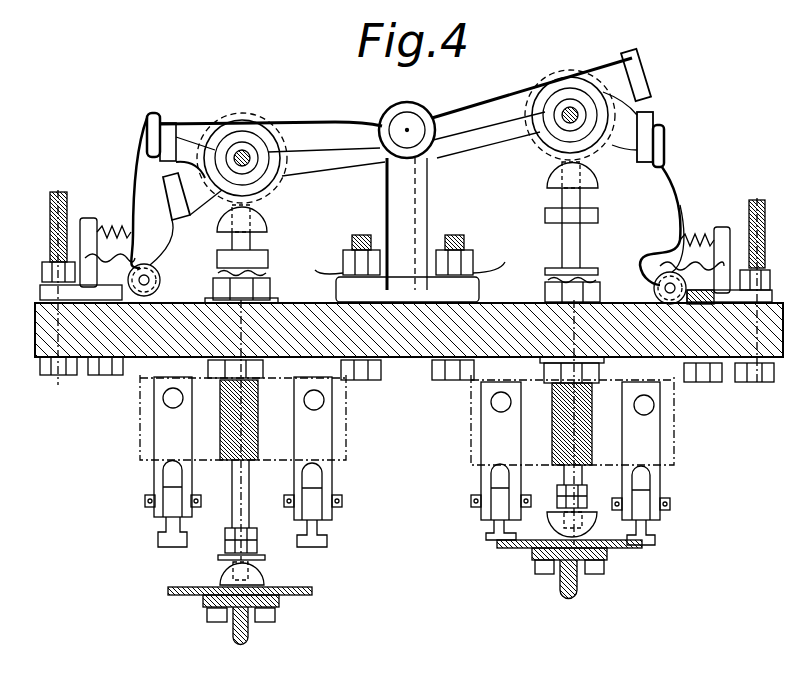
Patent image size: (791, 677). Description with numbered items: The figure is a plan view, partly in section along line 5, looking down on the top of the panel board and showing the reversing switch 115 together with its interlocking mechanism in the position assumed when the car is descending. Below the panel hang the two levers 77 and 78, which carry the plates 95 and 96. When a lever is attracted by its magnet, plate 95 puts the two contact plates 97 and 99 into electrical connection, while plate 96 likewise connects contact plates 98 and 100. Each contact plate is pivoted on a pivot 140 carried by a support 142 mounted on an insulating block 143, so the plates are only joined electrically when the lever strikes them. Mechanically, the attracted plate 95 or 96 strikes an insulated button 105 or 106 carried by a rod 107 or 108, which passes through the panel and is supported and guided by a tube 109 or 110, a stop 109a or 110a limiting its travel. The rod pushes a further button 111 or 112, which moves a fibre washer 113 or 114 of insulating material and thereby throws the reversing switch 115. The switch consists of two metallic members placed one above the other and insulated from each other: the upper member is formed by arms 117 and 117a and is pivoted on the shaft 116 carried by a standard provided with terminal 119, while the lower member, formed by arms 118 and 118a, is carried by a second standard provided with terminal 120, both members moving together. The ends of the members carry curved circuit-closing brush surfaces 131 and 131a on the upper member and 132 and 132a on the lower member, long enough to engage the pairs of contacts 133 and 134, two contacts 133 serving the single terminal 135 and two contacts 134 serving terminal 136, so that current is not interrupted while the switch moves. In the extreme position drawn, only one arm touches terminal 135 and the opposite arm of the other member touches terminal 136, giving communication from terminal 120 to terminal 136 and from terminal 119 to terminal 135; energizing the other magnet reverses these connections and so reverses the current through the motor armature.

The section line 5 is at (675, 30).
The lever 77 is at (236, 630).
The lever 78 is at (578, 590).
The plate 95 is at (188, 595).
The plate 96 is at (620, 550).
The contact plate 97 is at (165, 543).
The contact plate 98 is at (493, 535).
The contact plate 99 is at (315, 540).
The contact plate 100 is at (652, 536).
The insulated button 105 is at (230, 566).
The insulated button 106 is at (575, 531).
The rod 107 is at (240, 512).
The rod 108 is at (574, 481).
The tube 109 is at (232, 432).
The stop 109a is at (263, 266).
The tube 110 is at (578, 439).
The stop 110a is at (590, 220).
The button 111 is at (260, 223).
The button 112 is at (548, 176).
The fibre washer 113 is at (254, 120).
The fibre washer 114 is at (565, 80).
The reversing switch 115 is at (462, 98).
The shaft 116 is at (405, 128).
The arm 117 is at (610, 78).
The arm 117a is at (195, 132).
The arm 118 is at (530, 148).
The arm 118a is at (280, 175).
The terminal 119 is at (468, 263).
The terminal 120 is at (350, 262).
The curved circuit-closing brush surface 131 is at (640, 88).
The curved circuit-closing brush surface 131a is at (163, 158).
The curved circuit-closing brush surface 132 is at (646, 121).
The curved circuit-closing brush surface 132a is at (178, 192).
The contact 133 is at (160, 141).
The contact 134 is at (660, 146).
The terminal 135 is at (57, 242).
The terminal 136 is at (750, 226).
The pivot 140 is at (146, 501).
The support 142 is at (170, 446).
The insulating block 143 is at (152, 437).